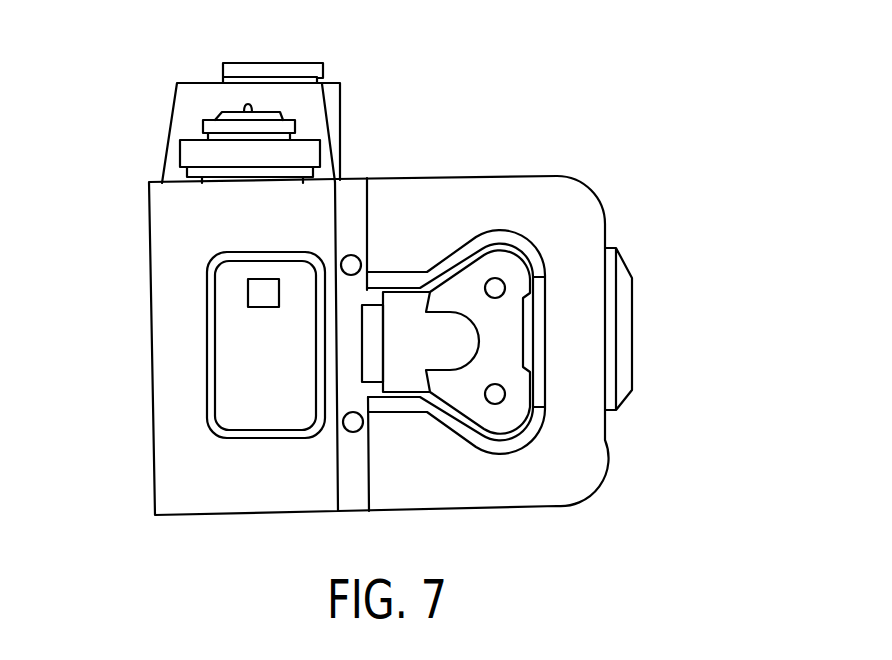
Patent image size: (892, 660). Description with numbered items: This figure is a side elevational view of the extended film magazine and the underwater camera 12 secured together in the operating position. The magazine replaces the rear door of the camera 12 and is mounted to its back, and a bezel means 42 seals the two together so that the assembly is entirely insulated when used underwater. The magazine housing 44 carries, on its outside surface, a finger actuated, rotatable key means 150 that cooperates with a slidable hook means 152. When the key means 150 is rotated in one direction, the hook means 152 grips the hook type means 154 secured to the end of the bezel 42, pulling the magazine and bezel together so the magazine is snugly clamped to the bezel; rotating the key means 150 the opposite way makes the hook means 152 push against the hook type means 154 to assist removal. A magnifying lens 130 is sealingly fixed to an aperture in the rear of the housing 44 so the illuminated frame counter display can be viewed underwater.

The underwater camera 12 is at (183, 390).
The bezel means 42 is at (355, 193).
The housing 44 is at (548, 185).
The magnifying lens 130 is at (636, 307).
The key means 150 is at (507, 367).
The hook means 152 is at (373, 362).
The hook type means 154 is at (355, 297).